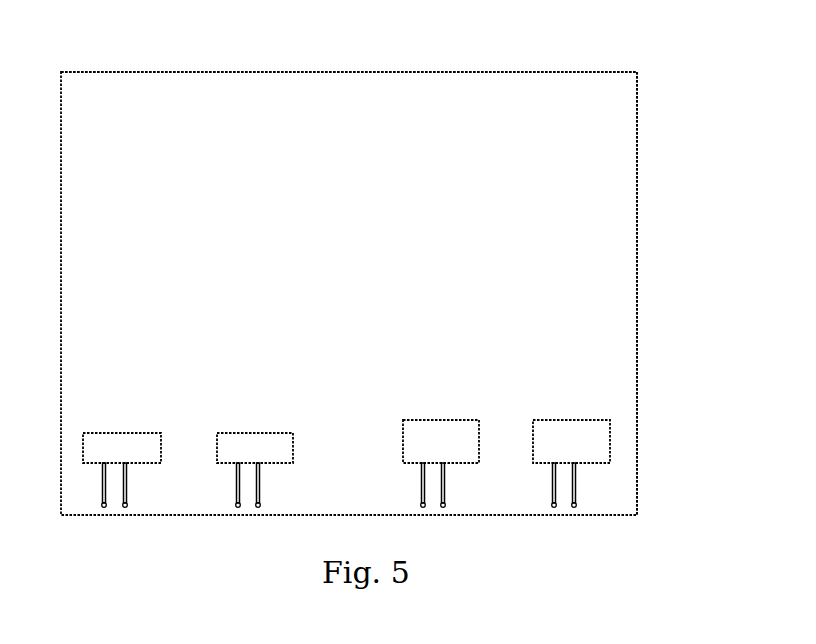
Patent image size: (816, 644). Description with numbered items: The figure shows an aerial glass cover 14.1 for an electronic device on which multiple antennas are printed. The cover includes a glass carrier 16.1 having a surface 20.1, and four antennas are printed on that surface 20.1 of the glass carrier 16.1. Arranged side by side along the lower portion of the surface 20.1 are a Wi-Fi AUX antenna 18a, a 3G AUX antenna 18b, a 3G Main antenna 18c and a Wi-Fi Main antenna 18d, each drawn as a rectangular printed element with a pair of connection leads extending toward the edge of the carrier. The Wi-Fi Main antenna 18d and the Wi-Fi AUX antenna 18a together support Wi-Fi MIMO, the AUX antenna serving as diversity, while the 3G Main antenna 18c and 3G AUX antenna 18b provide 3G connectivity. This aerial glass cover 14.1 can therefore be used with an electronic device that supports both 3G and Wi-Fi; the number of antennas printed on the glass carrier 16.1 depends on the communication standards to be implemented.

The aerial glass cover 14.1 is at (231, 70).
The glass carrier 16.1 is at (597, 70).
The surface 20.1 is at (623, 283).
The Wi-Fi AUX antenna 18a is at (122, 440).
The 3G AUX antenna 18b is at (255, 441).
The 3G Main antenna 18c is at (441, 428).
The Wi-Fi Main antenna 18d is at (570, 428).